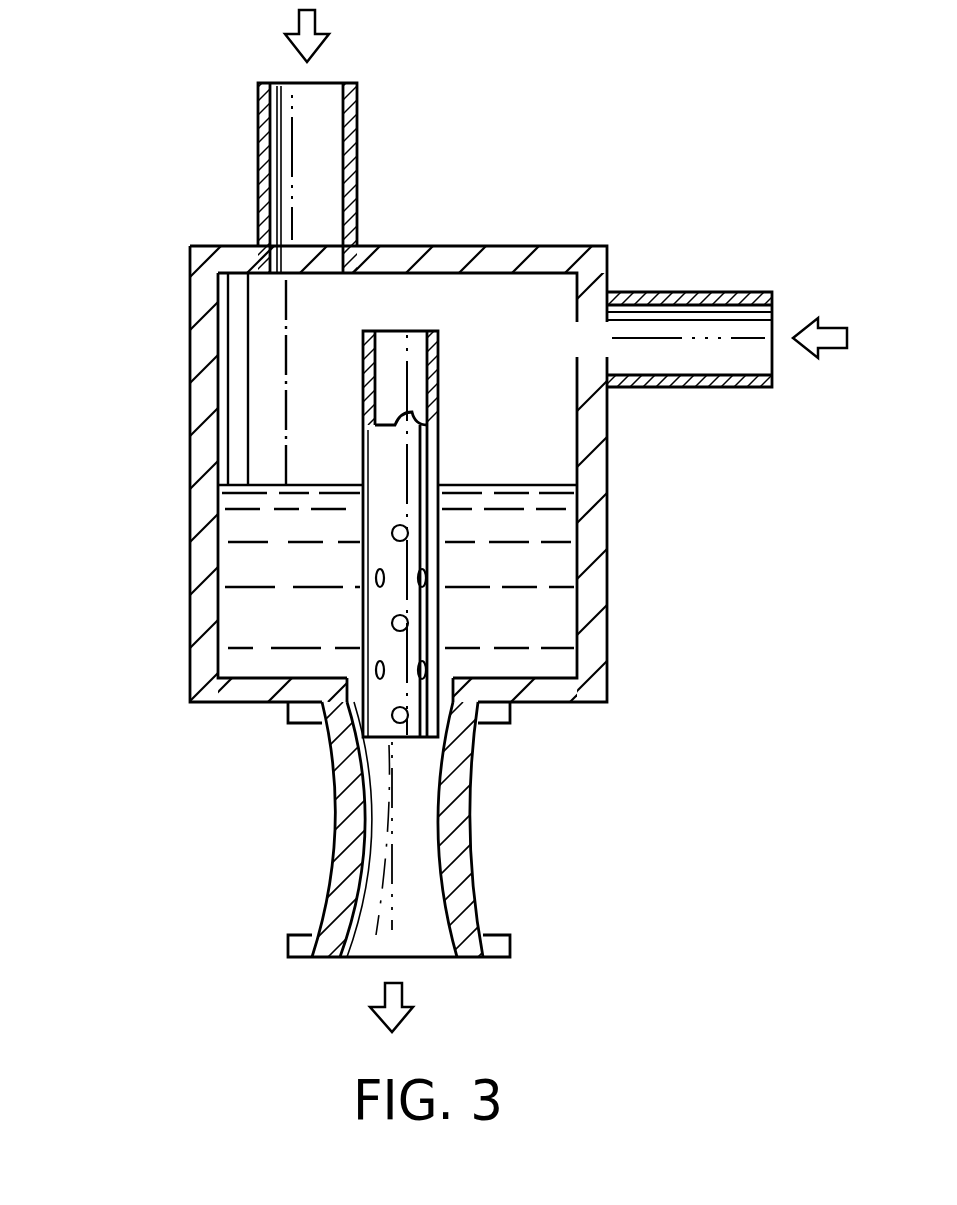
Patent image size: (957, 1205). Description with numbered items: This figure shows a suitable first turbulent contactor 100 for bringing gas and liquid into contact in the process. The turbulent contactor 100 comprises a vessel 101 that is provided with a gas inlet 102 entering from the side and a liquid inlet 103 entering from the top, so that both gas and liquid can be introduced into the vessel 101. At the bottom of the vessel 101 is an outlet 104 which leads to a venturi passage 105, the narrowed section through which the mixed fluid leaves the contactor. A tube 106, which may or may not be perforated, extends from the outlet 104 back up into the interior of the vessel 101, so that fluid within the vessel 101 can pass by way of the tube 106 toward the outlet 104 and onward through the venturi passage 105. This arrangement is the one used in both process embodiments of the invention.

The turbulent contactor 100 is at (140, 418).
The vessel 101 is at (607, 648).
The gas inlet 102 is at (760, 291).
The liquid inlet 103 is at (355, 108).
The outlet 104 is at (483, 722).
The venturi passage 105 is at (390, 858).
The tube 106 is at (372, 558).